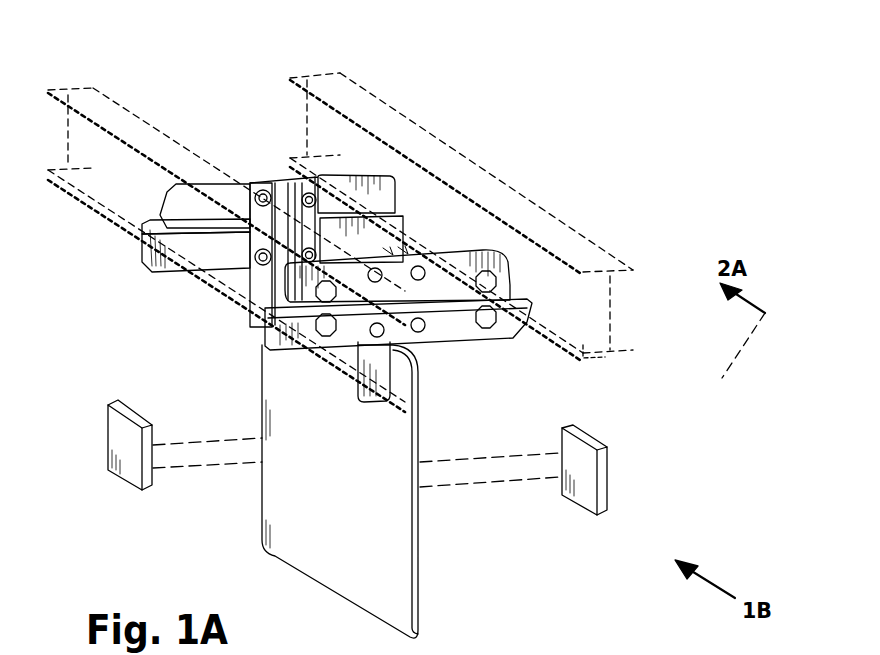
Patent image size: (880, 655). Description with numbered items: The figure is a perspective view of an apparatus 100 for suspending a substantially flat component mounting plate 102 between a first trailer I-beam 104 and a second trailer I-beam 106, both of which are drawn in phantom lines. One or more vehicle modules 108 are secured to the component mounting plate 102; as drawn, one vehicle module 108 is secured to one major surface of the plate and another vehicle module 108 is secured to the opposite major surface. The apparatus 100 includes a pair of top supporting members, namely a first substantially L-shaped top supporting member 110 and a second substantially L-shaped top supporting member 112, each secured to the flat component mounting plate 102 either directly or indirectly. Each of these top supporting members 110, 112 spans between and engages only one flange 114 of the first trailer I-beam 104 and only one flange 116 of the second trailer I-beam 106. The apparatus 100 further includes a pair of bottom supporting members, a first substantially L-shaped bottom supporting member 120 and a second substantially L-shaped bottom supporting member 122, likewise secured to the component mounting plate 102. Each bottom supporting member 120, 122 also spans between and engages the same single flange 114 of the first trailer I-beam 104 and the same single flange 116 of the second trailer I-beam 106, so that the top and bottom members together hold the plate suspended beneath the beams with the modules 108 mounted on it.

The apparatus 100 is at (188, 78).
The component mounting plate 102 is at (340, 597).
The first trailer I-beam 104 is at (71, 90).
The second trailer I-beam 106 is at (311, 73).
The vehicle module 108 is at (108, 438).
The first L-shaped top supporting member 110 is at (486, 250).
The second L-shaped top supporting member 112 is at (376, 173).
The flange of the first trailer I-beam 114 is at (383, 382).
The flange of the second trailer I-beam 116 is at (597, 362).
The first L-shaped bottom supporting member 120 is at (488, 338).
The second L-shaped bottom supporting member 122 is at (186, 270).